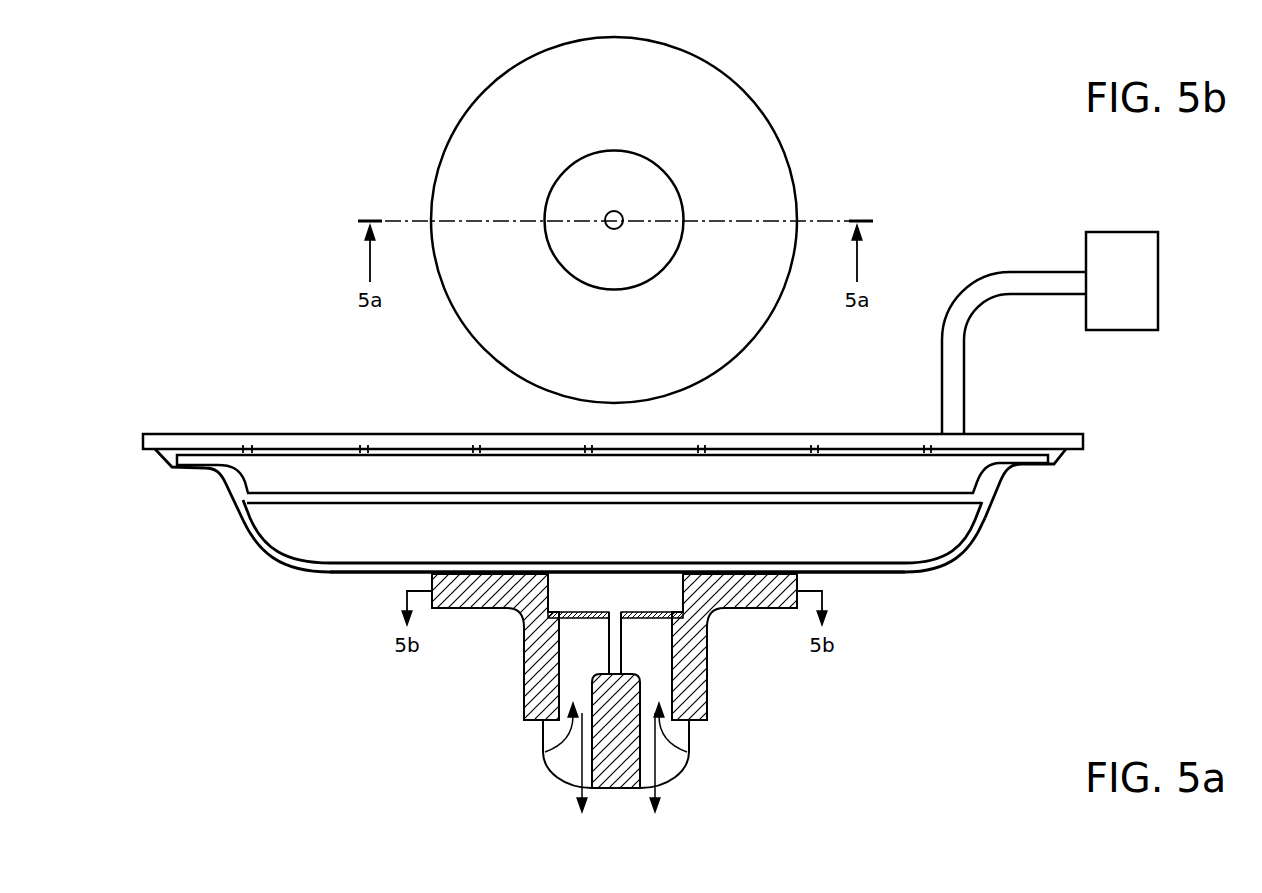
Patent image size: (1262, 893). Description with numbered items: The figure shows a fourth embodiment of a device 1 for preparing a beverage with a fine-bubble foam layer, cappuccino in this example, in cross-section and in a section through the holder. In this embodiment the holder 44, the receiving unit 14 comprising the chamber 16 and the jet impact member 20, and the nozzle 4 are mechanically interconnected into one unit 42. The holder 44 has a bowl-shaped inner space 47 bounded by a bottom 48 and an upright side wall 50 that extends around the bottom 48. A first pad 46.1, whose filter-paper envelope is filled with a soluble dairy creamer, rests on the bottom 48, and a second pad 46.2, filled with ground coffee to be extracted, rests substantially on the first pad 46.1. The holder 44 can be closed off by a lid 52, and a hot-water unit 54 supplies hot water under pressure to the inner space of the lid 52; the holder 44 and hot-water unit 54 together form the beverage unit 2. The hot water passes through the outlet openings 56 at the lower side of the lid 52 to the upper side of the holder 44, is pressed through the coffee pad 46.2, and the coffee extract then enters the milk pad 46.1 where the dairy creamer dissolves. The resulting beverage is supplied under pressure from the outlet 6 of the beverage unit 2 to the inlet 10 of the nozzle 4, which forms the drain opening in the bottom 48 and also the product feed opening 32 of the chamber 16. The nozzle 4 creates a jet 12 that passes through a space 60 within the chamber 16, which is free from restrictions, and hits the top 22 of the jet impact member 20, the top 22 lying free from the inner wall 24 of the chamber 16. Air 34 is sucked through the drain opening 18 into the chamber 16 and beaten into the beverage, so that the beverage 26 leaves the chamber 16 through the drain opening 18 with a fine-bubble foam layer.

In FIG. 5a, the device 1 is at (893, 734).
In FIG. 5a, the beverage unit 2 is at (1133, 444).
In FIG. 5b, the nozzle 4 is at (612, 231).
In FIG. 5a, the nozzle 4 is at (557, 642).
In FIG. 5a, the outlet 6 is at (623, 582).
In FIG. 5b, the inlet 10 is at (621, 213).
In FIG. 5a, the inlet 10 is at (610, 610).
In FIG. 5a, the jet 12 is at (608, 662).
In FIG. 5a, the receiving unit 14 is at (765, 710).
In FIG. 5a, the chamber 16 is at (665, 672).
In FIG. 5a, the drain opening 18 is at (543, 732).
In FIG. 5a, the jet impact member 20 is at (641, 688).
In FIG. 5a, the top 22 is at (634, 676).
In FIG. 5a, the inner wall 24 is at (557, 637).
In FIG. 5a, the beverage 26 is at (648, 808).
In FIG. 5a, the product feed opening 32 is at (611, 625).
In FIG. 5a, the air 34 is at (689, 757).
In FIG. 5a, the unit 42 is at (1030, 608).
In FIG. 5a, the holder 44 is at (967, 543).
In FIG. 5a, the first pad 46.1 is at (908, 552).
In FIG. 5a, the second pad 46.2 is at (883, 480).
In FIG. 5a, the bowl-shaped inner space 47 is at (977, 520).
In FIG. 5a, the bottom 48 is at (860, 573).
In FIG. 5a, the upright side wall 50 is at (1013, 477).
In FIG. 5a, the lid 52 is at (1024, 432).
In FIG. 5a, the hot-water unit 54 is at (1085, 262).
In FIG. 5a, the outlet openings 56 is at (361, 452).
In FIG. 5a, the space 60 is at (645, 622).